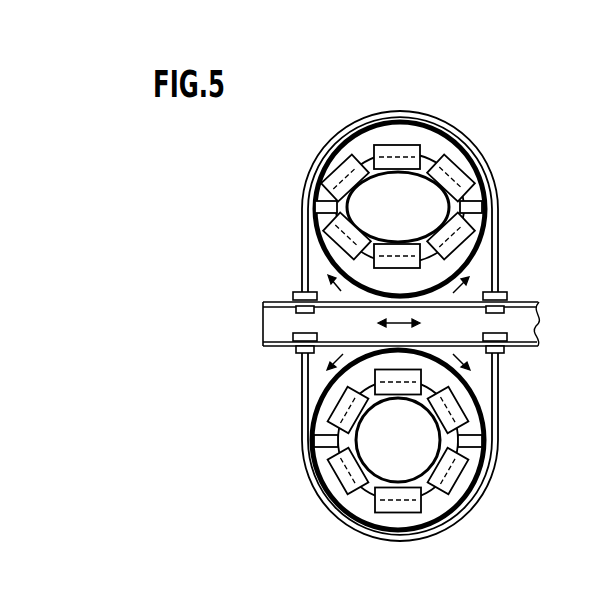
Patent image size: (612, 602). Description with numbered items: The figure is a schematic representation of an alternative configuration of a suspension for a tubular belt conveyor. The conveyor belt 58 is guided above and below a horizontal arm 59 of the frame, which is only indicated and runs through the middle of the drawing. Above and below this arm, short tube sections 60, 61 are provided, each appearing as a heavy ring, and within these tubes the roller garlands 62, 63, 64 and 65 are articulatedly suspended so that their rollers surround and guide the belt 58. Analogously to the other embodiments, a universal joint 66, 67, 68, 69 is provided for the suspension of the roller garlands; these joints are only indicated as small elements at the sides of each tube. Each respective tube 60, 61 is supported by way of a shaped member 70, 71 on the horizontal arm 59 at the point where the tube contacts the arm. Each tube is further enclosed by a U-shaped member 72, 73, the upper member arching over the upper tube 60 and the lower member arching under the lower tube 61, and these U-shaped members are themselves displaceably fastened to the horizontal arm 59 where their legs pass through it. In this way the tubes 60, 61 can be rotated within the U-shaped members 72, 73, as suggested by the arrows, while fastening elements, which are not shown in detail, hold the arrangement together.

The conveyor belt 58 is at (468, 152).
The horizontal arm 59 is at (530, 323).
The tube section 60 is at (318, 245).
The tube section 61 is at (325, 387).
The roller garland 62 is at (362, 152).
The roller garland 63 is at (470, 263).
The roller garland 64 is at (478, 383).
The roller garland 65 is at (343, 522).
The universal joint 66 is at (320, 205).
The universal joint 67 is at (479, 206).
The universal joint 68 is at (312, 445).
The universal joint 69 is at (477, 442).
The shaped member 70 is at (372, 303).
The shaped member 71 is at (418, 346).
The U-shaped member 72 is at (428, 116).
The U-shaped member 73 is at (426, 536).